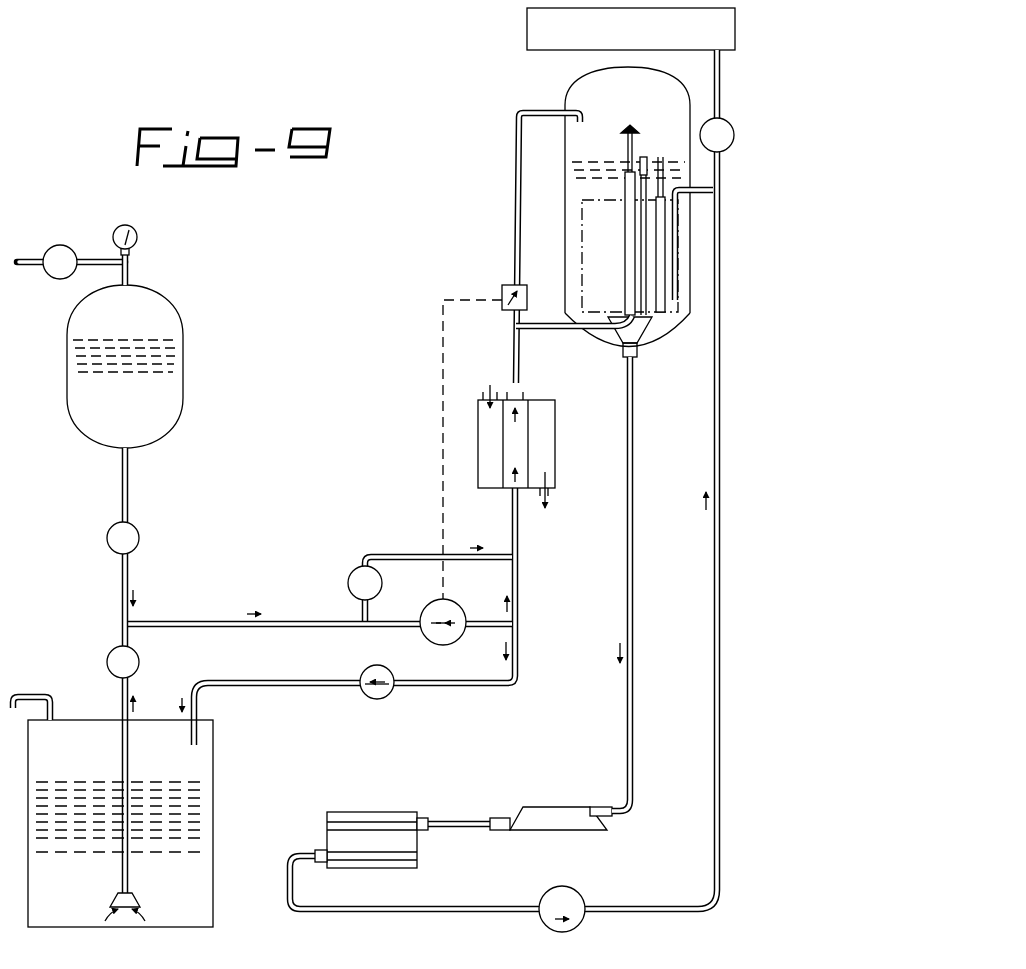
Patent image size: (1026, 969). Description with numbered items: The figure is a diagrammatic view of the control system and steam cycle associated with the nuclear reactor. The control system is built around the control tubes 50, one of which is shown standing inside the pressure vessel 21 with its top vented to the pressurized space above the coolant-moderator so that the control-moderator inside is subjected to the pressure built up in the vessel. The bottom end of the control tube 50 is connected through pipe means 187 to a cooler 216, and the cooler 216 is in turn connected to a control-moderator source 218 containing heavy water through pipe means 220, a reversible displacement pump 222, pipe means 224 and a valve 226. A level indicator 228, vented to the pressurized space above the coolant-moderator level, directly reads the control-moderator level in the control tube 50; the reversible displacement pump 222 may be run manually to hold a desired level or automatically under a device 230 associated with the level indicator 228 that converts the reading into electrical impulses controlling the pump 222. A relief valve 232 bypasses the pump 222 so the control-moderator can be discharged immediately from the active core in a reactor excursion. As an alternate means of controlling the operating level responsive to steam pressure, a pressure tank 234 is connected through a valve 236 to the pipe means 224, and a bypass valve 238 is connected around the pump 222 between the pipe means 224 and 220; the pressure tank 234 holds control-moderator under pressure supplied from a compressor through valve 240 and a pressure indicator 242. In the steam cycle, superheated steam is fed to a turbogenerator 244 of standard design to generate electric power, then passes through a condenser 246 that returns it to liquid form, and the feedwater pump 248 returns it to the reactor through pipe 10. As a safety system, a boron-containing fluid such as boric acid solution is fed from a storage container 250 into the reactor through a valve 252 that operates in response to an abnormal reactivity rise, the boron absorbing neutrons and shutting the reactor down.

The sampling tube 10 is at (680, 212).
The reaction vessel 21 is at (598, 253).
The control tube 50 is at (636, 133).
The pipe means 187 is at (530, 332).
The cooler 216 is at (554, 432).
The control-moderator source 218 is at (203, 768).
The pipe means 220 is at (518, 577).
The reversible displacement pump 222 is at (442, 645).
The pipe means 224 is at (220, 621).
The valve 226 is at (140, 663).
The level indicator 228 is at (516, 236).
The device 230 is at (502, 293).
The relief valve 232 is at (368, 698).
The pressure tank 234 is at (175, 383).
The valve 236 is at (140, 538).
The bypass valve 238 is at (348, 583).
The valve 240 is at (61, 245).
The pressure indicator 242 is at (138, 237).
The turbogenerator 244 is at (565, 794).
The condenser 246 is at (369, 816).
The feedwater pump 248 is at (572, 893).
The storage container 250 is at (545, 44).
The valve 252 is at (723, 149).